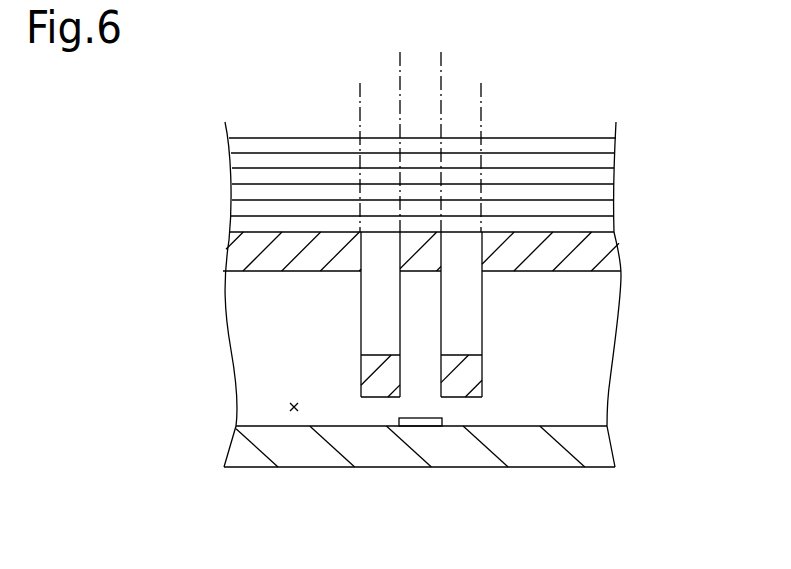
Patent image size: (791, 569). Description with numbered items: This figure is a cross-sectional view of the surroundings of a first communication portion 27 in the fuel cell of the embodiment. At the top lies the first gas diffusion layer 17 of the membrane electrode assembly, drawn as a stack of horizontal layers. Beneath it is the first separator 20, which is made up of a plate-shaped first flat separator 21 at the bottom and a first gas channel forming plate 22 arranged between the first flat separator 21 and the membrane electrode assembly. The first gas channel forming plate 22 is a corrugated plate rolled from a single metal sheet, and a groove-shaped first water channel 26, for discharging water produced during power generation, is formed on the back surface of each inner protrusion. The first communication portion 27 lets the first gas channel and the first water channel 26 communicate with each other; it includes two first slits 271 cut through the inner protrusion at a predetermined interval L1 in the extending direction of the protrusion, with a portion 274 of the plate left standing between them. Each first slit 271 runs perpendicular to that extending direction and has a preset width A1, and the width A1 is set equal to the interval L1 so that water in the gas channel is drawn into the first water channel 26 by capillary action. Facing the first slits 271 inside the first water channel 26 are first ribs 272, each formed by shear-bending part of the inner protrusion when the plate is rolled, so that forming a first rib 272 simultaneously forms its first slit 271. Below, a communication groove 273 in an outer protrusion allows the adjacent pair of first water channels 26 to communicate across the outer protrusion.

The first gas diffusion layer 17 is at (603, 177).
The first separator 20 is at (718, 277).
The first flat separator 21 is at (600, 450).
The first gas channel forming plate 22 is at (607, 262).
The first water channel 26 is at (294, 412).
The first communication portion 27 is at (419, 304).
The first slit 271 is at (361, 256).
The first rib 272 is at (361, 396).
The communication groove 273 is at (421, 427).
The partition wall 274 is at (422, 250).
The interval L1 is at (441, 61).
The width A1 is at (400, 90).